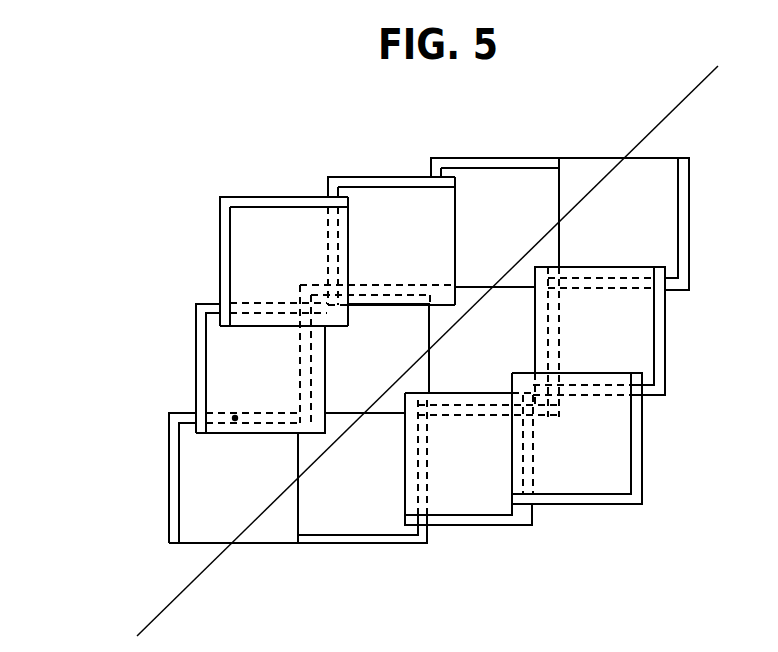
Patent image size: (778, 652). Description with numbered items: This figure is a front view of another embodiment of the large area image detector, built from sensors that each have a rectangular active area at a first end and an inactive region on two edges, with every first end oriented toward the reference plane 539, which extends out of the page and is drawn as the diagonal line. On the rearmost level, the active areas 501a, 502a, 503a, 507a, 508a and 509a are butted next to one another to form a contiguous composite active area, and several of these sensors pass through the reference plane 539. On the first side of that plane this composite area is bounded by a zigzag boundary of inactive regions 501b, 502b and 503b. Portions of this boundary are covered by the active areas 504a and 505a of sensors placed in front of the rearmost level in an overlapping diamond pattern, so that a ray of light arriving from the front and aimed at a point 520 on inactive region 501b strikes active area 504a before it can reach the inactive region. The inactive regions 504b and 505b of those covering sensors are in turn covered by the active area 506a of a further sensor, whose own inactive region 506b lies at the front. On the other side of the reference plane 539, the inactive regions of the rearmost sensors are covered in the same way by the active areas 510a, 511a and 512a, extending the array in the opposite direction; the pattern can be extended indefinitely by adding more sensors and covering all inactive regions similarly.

The active area 501a is at (268, 500).
The inactive region 501b is at (171, 414).
The active area 502a is at (405, 365).
The inactive region 502b is at (312, 285).
The active area 503a is at (535, 235).
The inactive region 503b is at (433, 160).
The active area 504a is at (287, 380).
The inactive region 504b is at (202, 306).
The active area 505a is at (417, 250).
The inactive region 505b is at (331, 178).
The active area 506a is at (302, 263).
The inactive region 506b is at (229, 197).
The active area 507a is at (390, 490).
The active area 508a is at (515, 355).
The active area 509a is at (657, 230).
The active area 510a is at (502, 475).
The active area 511a is at (636, 340).
The active area 512a is at (615, 460).
The point 520 is at (235, 418).
The reference plane 539 is at (671, 113).